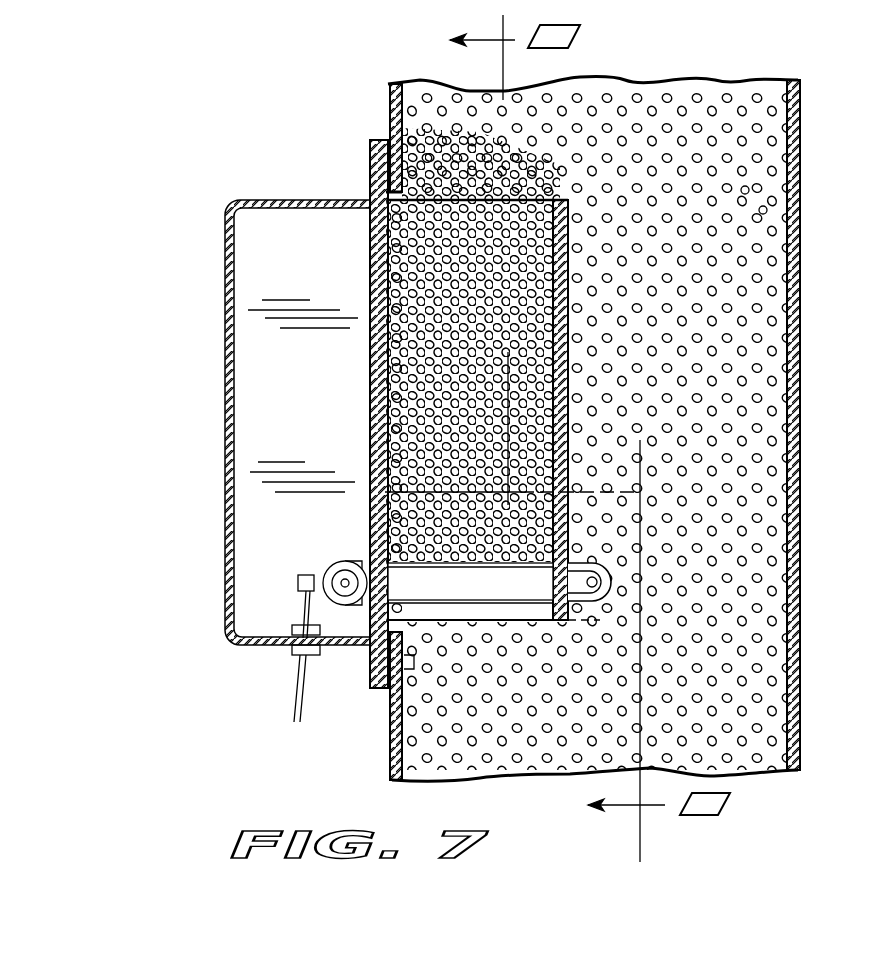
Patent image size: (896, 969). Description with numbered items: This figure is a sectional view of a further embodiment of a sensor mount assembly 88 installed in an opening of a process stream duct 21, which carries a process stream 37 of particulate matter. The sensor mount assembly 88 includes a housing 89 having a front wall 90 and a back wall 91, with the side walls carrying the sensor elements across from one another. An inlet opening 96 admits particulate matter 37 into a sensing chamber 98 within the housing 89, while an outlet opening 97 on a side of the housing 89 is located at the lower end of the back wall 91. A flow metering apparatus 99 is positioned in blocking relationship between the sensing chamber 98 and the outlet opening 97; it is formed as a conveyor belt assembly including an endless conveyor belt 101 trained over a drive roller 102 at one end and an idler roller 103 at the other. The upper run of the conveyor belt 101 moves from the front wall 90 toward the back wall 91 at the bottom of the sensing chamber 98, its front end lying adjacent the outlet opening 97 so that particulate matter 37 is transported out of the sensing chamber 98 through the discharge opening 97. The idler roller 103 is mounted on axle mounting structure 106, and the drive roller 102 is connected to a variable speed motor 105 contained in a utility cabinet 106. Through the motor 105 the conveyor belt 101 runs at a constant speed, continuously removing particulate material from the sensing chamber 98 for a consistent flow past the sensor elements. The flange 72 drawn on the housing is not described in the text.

The process stream duct 21 is at (800, 102).
The process stream 37 is at (749, 190).
The flange 72 is at (388, 197).
The sensor mount assembly 88 is at (268, 648).
The housing 89 is at (370, 405).
The front wall 90 is at (370, 296).
The back wall 91 is at (568, 400).
The inlet opening 96 is at (450, 200).
The outlet opening 97 is at (568, 540).
The sensing chamber 98 is at (448, 346).
The flow metering apparatus 99 is at (360, 617).
The conveyor belt 101 is at (488, 603).
The drive roller 102 is at (300, 578).
The idler roller 103 is at (605, 567).
The variable speed motor 105 is at (348, 570).
The utility cabinet 106 is at (228, 340).